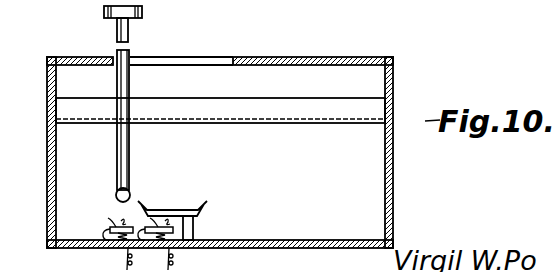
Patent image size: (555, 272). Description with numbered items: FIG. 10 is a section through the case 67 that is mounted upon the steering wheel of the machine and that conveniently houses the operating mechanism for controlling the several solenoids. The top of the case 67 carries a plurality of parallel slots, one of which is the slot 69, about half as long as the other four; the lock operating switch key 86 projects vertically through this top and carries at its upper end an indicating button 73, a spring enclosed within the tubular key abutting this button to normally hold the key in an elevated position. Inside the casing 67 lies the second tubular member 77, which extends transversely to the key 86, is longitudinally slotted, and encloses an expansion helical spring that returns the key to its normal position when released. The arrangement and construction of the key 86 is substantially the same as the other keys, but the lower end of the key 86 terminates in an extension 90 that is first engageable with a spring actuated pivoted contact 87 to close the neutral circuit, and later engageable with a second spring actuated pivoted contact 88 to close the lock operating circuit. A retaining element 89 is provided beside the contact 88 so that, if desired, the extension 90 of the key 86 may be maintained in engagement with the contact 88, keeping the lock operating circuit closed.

The case 67 is at (335, 57).
The slot 69 is at (220, 57).
The indicating button 73 is at (143, 12).
The second tubular member 77 is at (215, 101).
The lock operating switch key 86 is at (131, 30).
The spring actuated pivoted contact 87 is at (109, 234).
The second spring actuated pivoted contact 88 is at (160, 226).
The retaining element 89 is at (186, 211).
The extension 90 is at (128, 183).